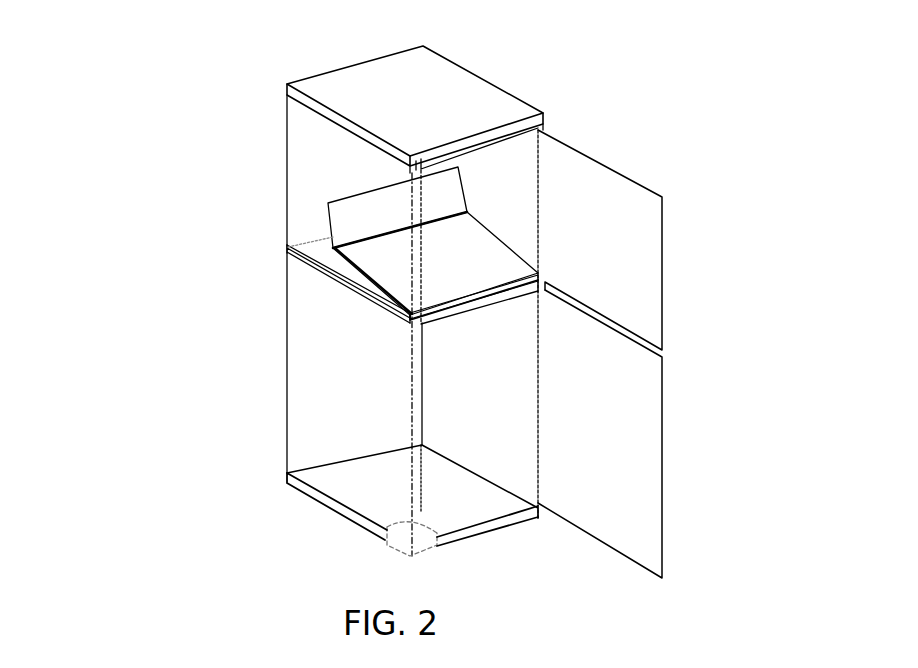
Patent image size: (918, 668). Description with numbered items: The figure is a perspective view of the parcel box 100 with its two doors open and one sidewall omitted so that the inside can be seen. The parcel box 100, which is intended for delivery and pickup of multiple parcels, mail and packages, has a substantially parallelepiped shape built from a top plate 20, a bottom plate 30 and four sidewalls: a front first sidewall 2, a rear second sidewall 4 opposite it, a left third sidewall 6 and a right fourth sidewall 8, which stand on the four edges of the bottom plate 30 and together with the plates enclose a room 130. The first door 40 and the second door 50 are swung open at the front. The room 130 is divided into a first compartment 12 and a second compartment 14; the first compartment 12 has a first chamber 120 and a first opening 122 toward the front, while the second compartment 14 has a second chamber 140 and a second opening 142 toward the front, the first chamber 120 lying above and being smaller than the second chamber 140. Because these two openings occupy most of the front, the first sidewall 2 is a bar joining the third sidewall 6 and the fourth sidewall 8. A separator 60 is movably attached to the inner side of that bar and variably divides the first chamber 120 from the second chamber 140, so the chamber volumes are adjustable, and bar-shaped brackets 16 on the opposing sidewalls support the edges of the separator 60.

The parcel box 100 is at (142, 100).
The first sidewall 2 is at (472, 303).
The second sidewall 4 is at (327, 147).
The third sidewall 6 is at (333, 407).
The fourth sidewall 8 is at (515, 400).
The first compartment 12 is at (290, 175).
The second compartment 14 is at (293, 349).
The bracket 16 is at (325, 273).
The top plate 20 is at (465, 95).
The bottom plate 30 is at (443, 512).
The first door 40 is at (627, 243).
The second door 50 is at (620, 418).
The separator 60 is at (468, 252).
The first chamber 120 is at (306, 217).
The first opening 122 is at (507, 153).
The room 130 is at (128, 202).
The second chamber 140 is at (313, 325).
The second opening 142 is at (500, 477).